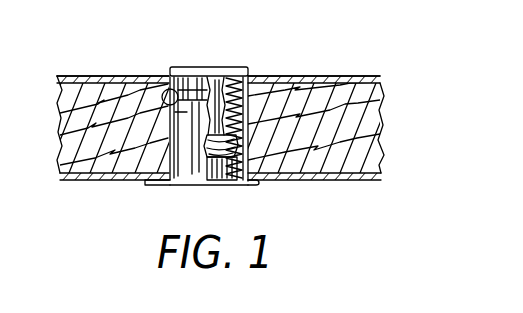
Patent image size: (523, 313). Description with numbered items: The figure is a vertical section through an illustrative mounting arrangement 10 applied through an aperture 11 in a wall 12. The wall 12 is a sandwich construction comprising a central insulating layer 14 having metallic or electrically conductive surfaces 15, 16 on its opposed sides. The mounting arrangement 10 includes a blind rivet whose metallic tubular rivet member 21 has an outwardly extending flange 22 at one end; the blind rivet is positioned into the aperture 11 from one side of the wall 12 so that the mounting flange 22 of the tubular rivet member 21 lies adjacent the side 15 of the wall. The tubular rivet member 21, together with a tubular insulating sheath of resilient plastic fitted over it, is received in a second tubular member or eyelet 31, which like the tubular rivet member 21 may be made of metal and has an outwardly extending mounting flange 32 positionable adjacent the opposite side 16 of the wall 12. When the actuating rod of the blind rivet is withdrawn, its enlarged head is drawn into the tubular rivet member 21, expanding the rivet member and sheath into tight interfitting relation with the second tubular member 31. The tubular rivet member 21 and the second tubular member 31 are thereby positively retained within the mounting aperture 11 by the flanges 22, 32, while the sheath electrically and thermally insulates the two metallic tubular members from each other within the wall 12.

The mounting arrangement 10 is at (323, 186).
The aperture 11 is at (164, 96).
The wall 12 is at (381, 101).
The central insulating layer 14 is at (375, 148).
The metallic surface 15 is at (332, 76).
The metallic surface 16 is at (355, 181).
The tubular rivet member 21 is at (213, 85).
The flange 22 is at (232, 76).
The second tubular member 31 is at (196, 168).
The mounting flange 32 is at (258, 191).